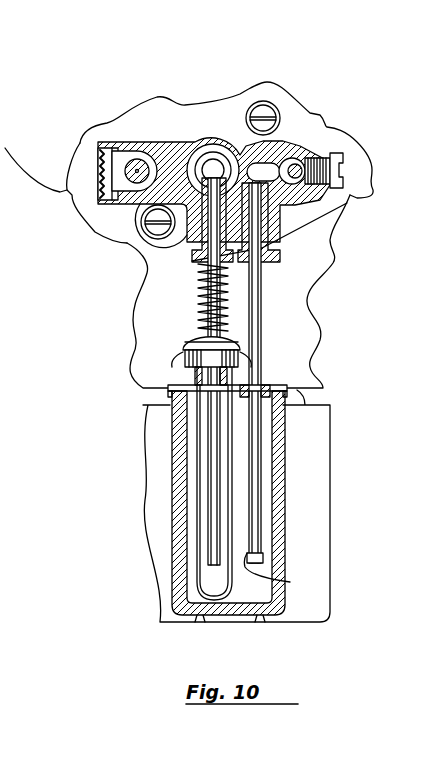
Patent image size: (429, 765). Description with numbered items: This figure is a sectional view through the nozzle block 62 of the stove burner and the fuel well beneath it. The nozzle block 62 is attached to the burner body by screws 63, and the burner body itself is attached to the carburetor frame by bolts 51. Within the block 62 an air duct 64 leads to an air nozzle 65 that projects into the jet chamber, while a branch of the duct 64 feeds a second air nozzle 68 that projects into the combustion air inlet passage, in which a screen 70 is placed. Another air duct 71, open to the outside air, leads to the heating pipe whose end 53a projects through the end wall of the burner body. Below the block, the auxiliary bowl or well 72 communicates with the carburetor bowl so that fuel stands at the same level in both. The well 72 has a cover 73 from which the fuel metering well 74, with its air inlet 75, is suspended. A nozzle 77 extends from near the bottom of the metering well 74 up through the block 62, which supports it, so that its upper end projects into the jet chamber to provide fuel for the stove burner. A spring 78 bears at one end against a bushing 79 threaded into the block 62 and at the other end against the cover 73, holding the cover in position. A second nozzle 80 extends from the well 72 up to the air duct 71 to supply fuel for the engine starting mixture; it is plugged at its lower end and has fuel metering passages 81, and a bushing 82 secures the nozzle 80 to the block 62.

The bolts 51 is at (82, 185).
The end of heating pipe coil 53a is at (332, 162).
The nozzle block 62 is at (297, 198).
The screws 63 is at (266, 112).
The air duct 64 is at (212, 168).
The air nozzle 65 is at (196, 154).
The air nozzle 68 is at (130, 158).
The screen 70 is at (98, 150).
The air duct 71 is at (298, 168).
The auxiliary bowl or well 72 is at (280, 484).
The cover 73 is at (168, 381).
The fuel metering well 74 is at (198, 527).
The air inlet 75 is at (196, 421).
The nozzle 77 is at (214, 178).
The spring 78 is at (203, 292).
The bushing 79 is at (192, 261).
The nozzle 80 is at (262, 327).
The fuel metering passages 81 is at (262, 553).
The bushing 82 is at (264, 255).